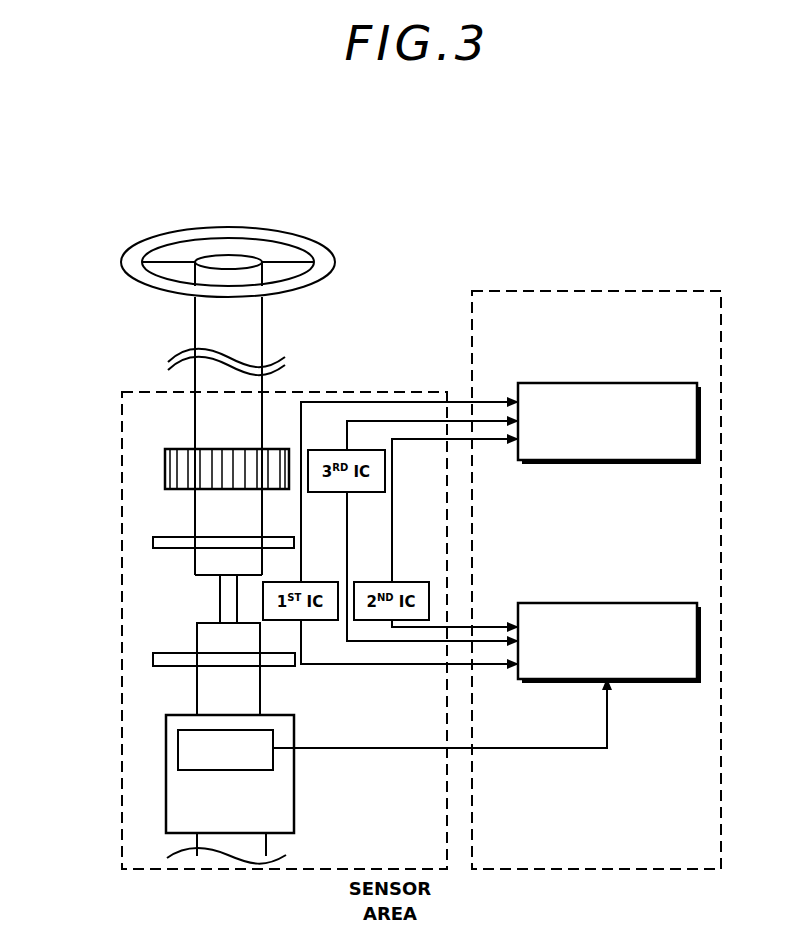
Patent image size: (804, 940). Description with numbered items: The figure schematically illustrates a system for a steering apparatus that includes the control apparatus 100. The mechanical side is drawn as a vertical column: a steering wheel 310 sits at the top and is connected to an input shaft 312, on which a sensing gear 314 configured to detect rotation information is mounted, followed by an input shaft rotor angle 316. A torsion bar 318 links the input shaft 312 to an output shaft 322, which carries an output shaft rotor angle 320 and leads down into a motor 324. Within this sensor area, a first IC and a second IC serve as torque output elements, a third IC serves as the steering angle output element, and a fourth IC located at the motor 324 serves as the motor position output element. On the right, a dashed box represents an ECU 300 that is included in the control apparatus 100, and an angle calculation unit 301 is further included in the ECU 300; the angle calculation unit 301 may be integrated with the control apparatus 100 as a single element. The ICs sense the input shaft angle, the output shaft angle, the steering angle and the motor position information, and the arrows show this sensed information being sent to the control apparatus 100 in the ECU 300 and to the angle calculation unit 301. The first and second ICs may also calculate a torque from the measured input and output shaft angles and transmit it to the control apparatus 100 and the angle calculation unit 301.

The control apparatus 100 is at (699, 641).
The ECU 300 is at (697, 291).
The angle calculation unit 301 is at (699, 422).
The steering wheel 310 is at (318, 240).
The input shaft 312 is at (195, 413).
The sensing gear 314 is at (165, 468).
The input shaft rotor angle 316 is at (153, 542).
The torsion bar 318 is at (220, 587).
The output shaft rotor angle 320 is at (153, 657).
The output shaft 322 is at (197, 680).
The motor 324 is at (166, 762).